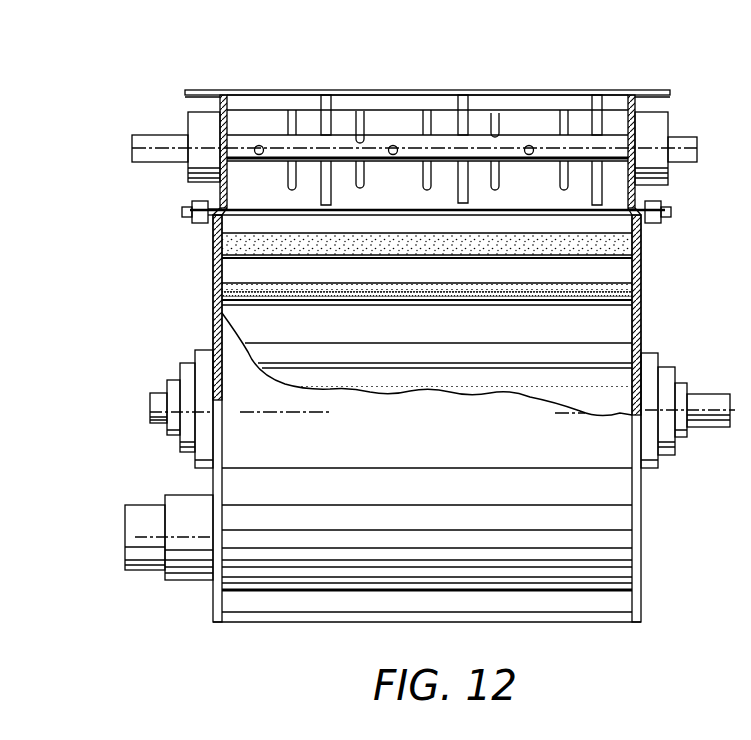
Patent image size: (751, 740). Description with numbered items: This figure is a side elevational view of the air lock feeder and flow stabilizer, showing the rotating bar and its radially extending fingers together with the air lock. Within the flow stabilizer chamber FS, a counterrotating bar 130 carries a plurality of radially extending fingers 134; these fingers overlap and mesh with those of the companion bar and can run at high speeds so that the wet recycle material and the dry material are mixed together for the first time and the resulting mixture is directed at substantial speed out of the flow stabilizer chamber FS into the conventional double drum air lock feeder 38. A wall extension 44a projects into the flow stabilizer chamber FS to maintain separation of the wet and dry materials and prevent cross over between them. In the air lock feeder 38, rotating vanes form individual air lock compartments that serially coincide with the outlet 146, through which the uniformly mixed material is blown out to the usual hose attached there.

The double drum air lock feeder 38 is at (650, 319).
The wall extension 44a is at (583, 102).
The flow stabilizer chamber FS is at (535, 88).
The counterrotating bar 130 is at (153, 146).
The radially extending fingers 134 is at (334, 106).
The outlet 146 is at (152, 512).